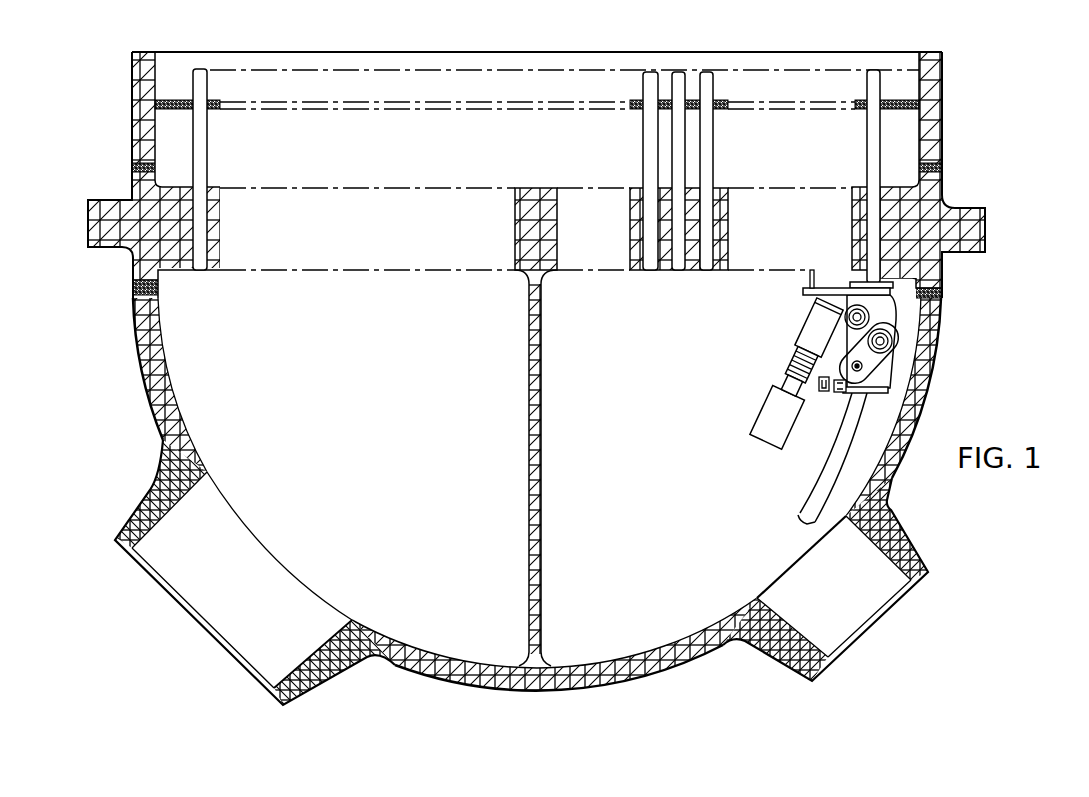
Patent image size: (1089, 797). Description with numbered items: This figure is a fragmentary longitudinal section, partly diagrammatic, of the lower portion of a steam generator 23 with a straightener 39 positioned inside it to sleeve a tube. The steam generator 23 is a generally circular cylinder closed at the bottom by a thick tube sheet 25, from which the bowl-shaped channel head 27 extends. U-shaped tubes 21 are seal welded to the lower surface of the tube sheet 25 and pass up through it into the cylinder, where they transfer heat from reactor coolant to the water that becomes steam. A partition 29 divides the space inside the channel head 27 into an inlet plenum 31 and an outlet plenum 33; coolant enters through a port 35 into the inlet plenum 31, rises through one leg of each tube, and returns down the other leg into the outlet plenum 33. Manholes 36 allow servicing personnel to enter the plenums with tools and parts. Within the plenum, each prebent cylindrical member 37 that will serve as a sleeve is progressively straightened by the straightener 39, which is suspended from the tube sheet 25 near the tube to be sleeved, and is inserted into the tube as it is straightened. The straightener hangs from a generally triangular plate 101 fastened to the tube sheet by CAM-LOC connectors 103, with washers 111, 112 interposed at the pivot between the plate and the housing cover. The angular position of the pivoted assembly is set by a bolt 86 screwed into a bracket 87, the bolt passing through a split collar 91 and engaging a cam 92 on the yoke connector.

The tubes 21 is at (203, 162).
The steam generator 23 is at (1021, 251).
The tube sheet 25 is at (737, 192).
The channel head 27 is at (890, 470).
The partition 29 is at (529, 328).
The inlet plenum 31 is at (583, 655).
The outlet plenum 33 is at (166, 313).
The port 35 is at (890, 603).
The manhole 36 is at (305, 662).
The cylindrical member 37 is at (815, 498).
The straightener 39 is at (788, 325).
The bolt 86 is at (816, 393).
The bracket 87 is at (889, 392).
The collar 91 is at (827, 392).
The cam 92 is at (841, 393).
The triangular plate 101 is at (803, 291).
The CAM-LOC connectors 103 is at (807, 277).
The washer 111 is at (855, 282).
The washer 112 is at (896, 316).